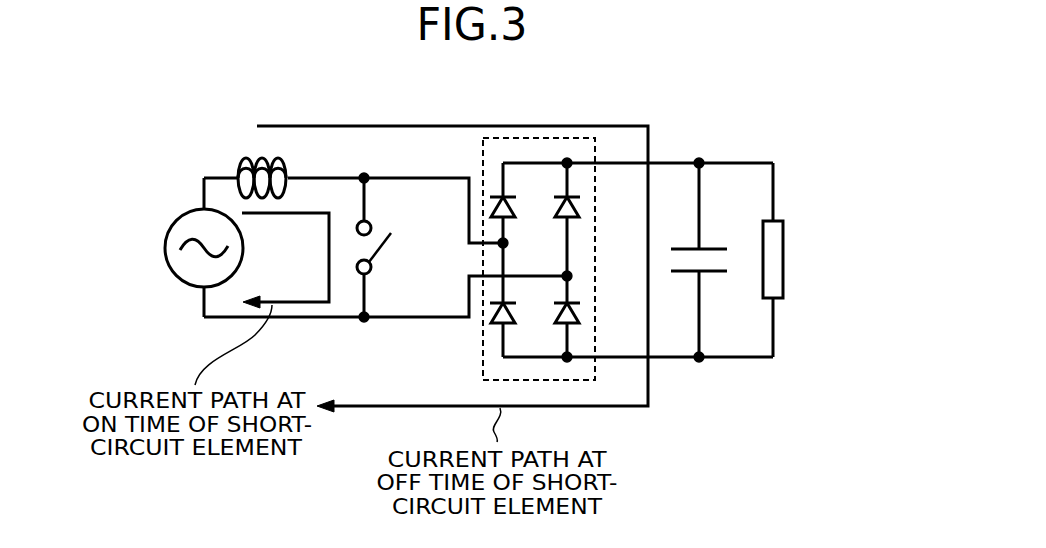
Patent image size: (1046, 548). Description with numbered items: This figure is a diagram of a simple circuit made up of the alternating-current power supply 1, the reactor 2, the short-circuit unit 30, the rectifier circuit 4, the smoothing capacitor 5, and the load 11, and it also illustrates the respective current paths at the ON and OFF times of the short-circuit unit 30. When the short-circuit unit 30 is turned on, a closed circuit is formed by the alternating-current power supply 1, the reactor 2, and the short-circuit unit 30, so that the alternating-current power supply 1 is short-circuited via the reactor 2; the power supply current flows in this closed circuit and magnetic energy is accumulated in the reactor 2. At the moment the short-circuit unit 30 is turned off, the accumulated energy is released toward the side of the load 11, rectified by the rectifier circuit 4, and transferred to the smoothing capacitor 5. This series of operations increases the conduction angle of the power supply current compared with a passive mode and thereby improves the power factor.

The alternating-current power supply 1 is at (165, 246).
The reactor 2 is at (238, 167).
The short-circuit unit 30 is at (372, 227).
The rectifier circuit 4 is at (537, 138).
The smoothing capacitor 5 is at (711, 247).
The load 11 is at (784, 248).